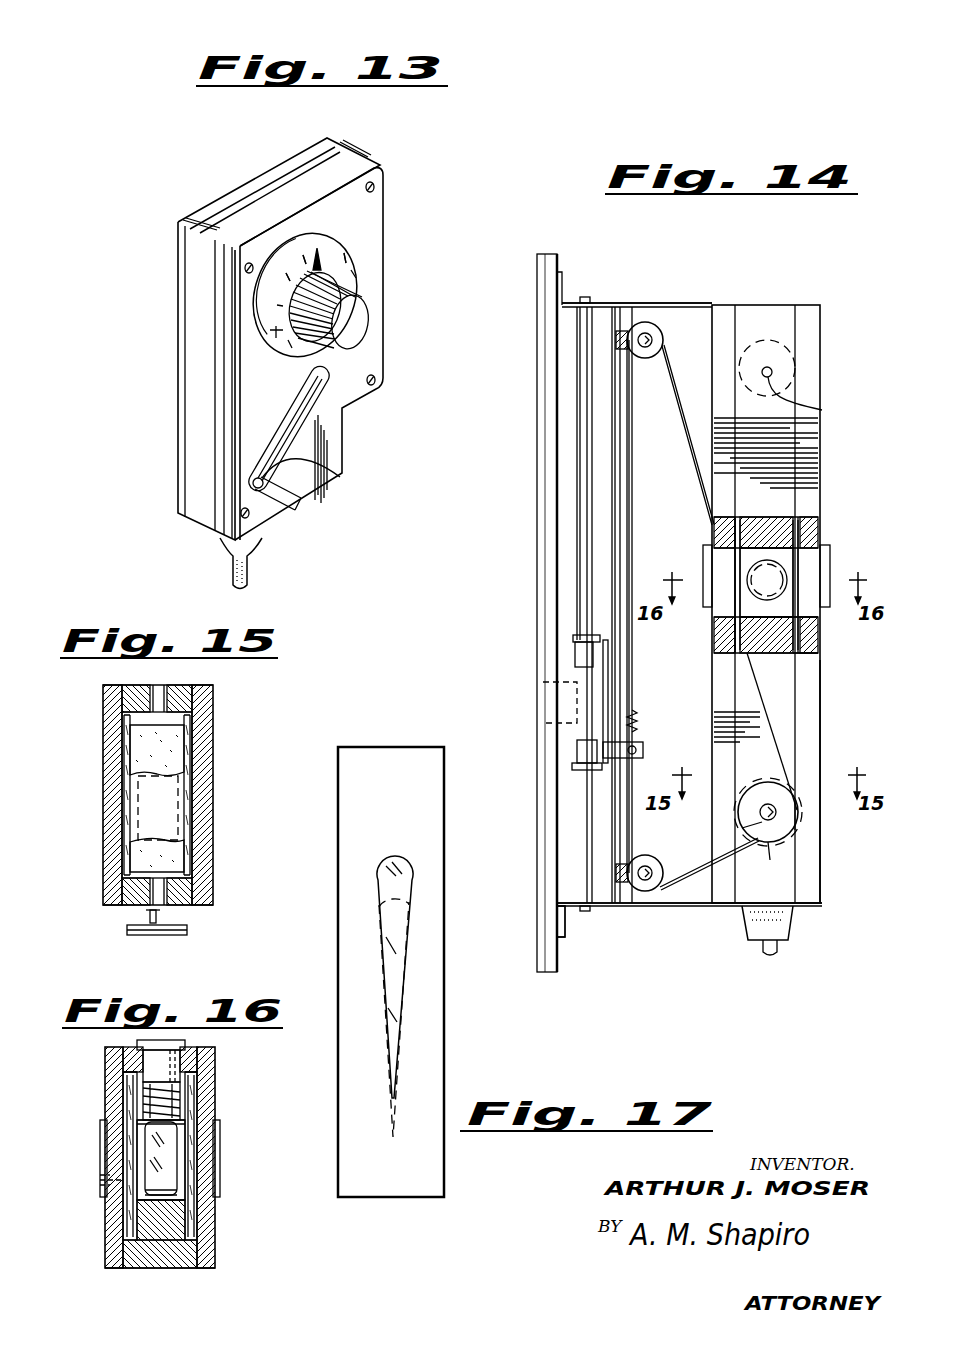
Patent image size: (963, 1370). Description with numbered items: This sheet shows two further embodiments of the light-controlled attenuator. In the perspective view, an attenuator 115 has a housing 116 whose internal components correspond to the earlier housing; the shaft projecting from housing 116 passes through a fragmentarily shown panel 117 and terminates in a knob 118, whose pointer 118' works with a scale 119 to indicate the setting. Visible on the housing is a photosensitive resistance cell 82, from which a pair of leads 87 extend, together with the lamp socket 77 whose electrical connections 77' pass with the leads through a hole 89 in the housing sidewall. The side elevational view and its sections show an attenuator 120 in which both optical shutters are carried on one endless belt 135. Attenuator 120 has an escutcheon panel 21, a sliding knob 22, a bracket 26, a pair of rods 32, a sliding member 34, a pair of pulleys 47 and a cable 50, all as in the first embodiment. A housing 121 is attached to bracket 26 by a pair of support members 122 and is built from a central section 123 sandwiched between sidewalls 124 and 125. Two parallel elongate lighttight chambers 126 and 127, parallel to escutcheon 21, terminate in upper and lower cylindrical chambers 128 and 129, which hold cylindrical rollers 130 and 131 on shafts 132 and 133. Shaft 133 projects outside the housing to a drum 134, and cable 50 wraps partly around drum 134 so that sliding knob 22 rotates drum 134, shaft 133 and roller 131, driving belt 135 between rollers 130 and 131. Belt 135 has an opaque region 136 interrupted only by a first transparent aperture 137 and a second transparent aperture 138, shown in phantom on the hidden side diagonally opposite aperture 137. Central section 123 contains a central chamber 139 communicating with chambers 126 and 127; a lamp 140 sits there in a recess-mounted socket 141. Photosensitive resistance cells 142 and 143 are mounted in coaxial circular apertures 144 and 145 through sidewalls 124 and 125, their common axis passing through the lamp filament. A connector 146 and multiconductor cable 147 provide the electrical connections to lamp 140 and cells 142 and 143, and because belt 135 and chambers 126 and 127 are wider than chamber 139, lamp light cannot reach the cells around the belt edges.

In FIG. 13, the attenuator 115 is at (258, 176).
In FIG. 13, the housing 116 is at (353, 151).
In FIG. 13, the panel 117 is at (357, 263).
In FIG. 13, the knob 118 is at (361, 309).
In FIG. 13, the pointer 118' is at (377, 246).
In FIG. 13, the scale 119 is at (276, 350).
In FIG. 13, the photosensitive resistance cell 82 is at (343, 414).
In FIG. 13, the first pair of leads 87 is at (341, 477).
In FIG. 13, the lamp socket 77 is at (313, 498).
In FIG. 13, the electrical connections 77' is at (297, 512).
In FIG. 13, the hole 89 is at (260, 518).
In FIG. 14, the escutcheon panel 21 is at (540, 418).
In FIG. 14, the knob 22 is at (567, 718).
In FIG. 14, the bracket 26 is at (607, 912).
In FIG. 14, the rods 32 is at (585, 812).
In FIG. 14, the sliding member 34 is at (561, 642).
In FIG. 14, the pulleys 47 is at (649, 326).
In FIG. 14, the cable 50 is at (688, 338).
In FIG. 14, the light-controlled attenuator 120 is at (534, 460).
In FIG. 14, the housing 121 is at (770, 312).
In FIG. 14, the support members 122 is at (640, 291).
In FIG. 14, the central section 123 is at (787, 867).
In FIG. 15, the central section 123 is at (190, 698).
In FIG. 16, the central section 123 is at (158, 1263).
In FIG. 14, the sidewall 124 is at (727, 898).
In FIG. 15, the sidewall 124 is at (112, 697).
In FIG. 16, the sidewall 124 is at (120, 1263).
In FIG. 14, the sidewall 125 is at (817, 890).
In FIG. 15, the sidewall 125 is at (203, 707).
In FIG. 16, the sidewall 125 is at (212, 1266).
In FIG. 14, the lighttight chamber 126 is at (730, 648).
In FIG. 15, the lighttight chamber 126 is at (122, 745).
In FIG. 16, the lighttight chamber 126 is at (123, 1080).
In FIG. 14, the lighttight chamber 127 is at (810, 650).
In FIG. 15, the lighttight chamber 127 is at (180, 773).
In FIG. 16, the lighttight chamber 127 is at (198, 1068).
In FIG. 14, the cylindrical chamber 128 is at (793, 357).
In FIG. 14, the cylindrical chamber 129 is at (803, 827).
In FIG. 15, the cylindrical chamber 129 is at (183, 865).
In FIG. 14, the cylindrical roller 130 is at (785, 375).
In FIG. 14, the cylindrical roller 131 is at (742, 828).
In FIG. 15, the cylindrical roller 131 is at (175, 820).
In FIG. 14, the shaft 132 is at (823, 411).
In FIG. 14, the shaft 133 is at (773, 810).
In FIG. 15, the shaft 133 is at (160, 916).
In FIG. 14, the drum 134 is at (770, 832).
In FIG. 15, the drum 134 is at (177, 936).
In FIG. 14, the endless belt 135 is at (801, 524).
In FIG. 15, the endless belt 135 is at (191, 748).
In FIG. 16, the endless belt 135 is at (129, 1228).
In FIG. 17, the endless belt 135 is at (446, 928).
In FIG. 14, the opaque region 136 is at (800, 540).
In FIG. 17, the opaque region 136 is at (430, 997).
In FIG. 14, the first transparent aperture 137 is at (733, 583).
In FIG. 16, the first transparent aperture 137 is at (130, 1153).
In FIG. 17, the first transparent aperture 137 is at (400, 885).
In FIG. 14, the second transparent aperture 138 is at (778, 556).
In FIG. 16, the second transparent aperture 138 is at (190, 1160).
In FIG. 17, the second transparent aperture 138 is at (410, 965).
In FIG. 14, the central chamber 139 is at (712, 527).
In FIG. 16, the central chamber 139 is at (173, 1123).
In FIG. 14, the lamp 140 is at (797, 643).
In FIG. 16, the lamp 140 is at (190, 1196).
In FIG. 16, the socket 141 is at (148, 1060).
In FIG. 14, the photosensitive resistance cell 142 is at (715, 553).
In FIG. 16, the photosensitive resistance cell 142 is at (102, 1177).
In FIG. 16, the photosensitive resistance cell 143 is at (175, 1192).
In FIG. 16, the circular aperture 144 is at (113, 1127).
In FIG. 16, the circular aperture 145 is at (214, 1130).
In FIG. 14, the connector 146 is at (792, 927).
In FIG. 14, the multiconductor cable 147 is at (779, 951).